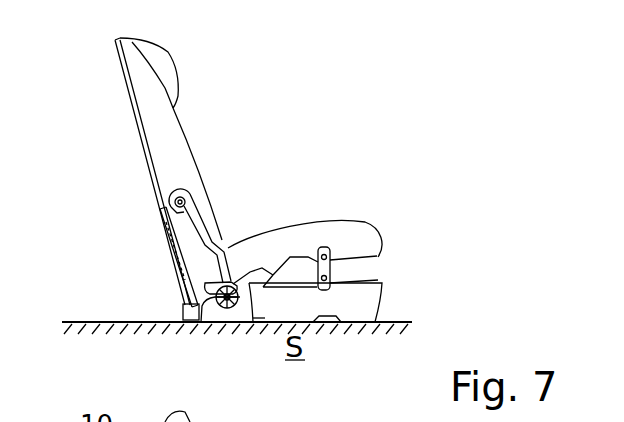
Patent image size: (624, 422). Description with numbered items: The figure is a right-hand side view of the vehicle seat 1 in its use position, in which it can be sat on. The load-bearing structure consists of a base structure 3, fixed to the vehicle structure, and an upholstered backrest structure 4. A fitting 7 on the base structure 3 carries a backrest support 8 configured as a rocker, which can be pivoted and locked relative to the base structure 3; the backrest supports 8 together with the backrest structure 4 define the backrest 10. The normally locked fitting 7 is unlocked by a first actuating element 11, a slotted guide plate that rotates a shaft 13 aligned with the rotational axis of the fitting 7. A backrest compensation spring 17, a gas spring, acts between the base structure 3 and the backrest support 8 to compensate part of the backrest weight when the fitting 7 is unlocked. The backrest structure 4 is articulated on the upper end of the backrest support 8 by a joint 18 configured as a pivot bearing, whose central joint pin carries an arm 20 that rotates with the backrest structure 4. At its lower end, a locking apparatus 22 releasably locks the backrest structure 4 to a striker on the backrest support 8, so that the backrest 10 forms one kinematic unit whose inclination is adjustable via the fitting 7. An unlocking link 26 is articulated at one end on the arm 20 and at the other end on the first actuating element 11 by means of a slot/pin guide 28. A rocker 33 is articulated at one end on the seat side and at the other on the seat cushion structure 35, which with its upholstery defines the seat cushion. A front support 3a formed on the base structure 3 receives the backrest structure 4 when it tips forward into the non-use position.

The vehicle seat 1 is at (311, 101).
The base structure 3 is at (372, 303).
The front support 3a is at (265, 275).
The backrest structure 4 is at (130, 107).
The fitting 7 is at (259, 322).
The backrest support 8 is at (172, 208).
The backrest 10 is at (222, 239).
The first actuating element 11 is at (175, 328).
The shaft 13 is at (232, 337).
The backrest compensation spring 17 is at (165, 248).
The joint 18 is at (184, 195).
The arm 20 is at (170, 201).
The locking apparatus 22 is at (183, 305).
The unlocking link 26 is at (215, 223).
The slot/pin guide 28 is at (200, 333).
The rocker 33 is at (362, 260).
The seat cushion structure 35 is at (332, 262).